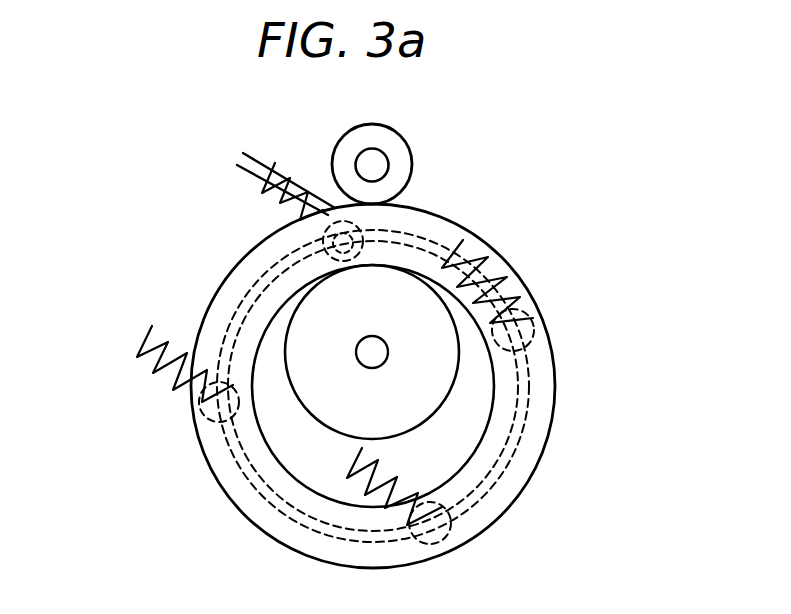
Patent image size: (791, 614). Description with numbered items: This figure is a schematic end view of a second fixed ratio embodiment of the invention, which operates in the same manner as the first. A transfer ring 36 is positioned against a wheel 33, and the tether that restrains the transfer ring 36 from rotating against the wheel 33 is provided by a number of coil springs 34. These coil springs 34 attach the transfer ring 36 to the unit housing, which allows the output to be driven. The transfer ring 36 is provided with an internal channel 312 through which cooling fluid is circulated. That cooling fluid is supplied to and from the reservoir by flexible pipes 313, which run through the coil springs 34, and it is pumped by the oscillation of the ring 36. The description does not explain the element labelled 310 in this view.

The wheel 33 is at (398, 157).
The coil springs 34 is at (267, 210).
The transfer ring 36 is at (543, 377).
The tensioning member 310 is at (217, 148).
The internal channel 312 is at (497, 472).
The flexible pipes 313 is at (243, 153).